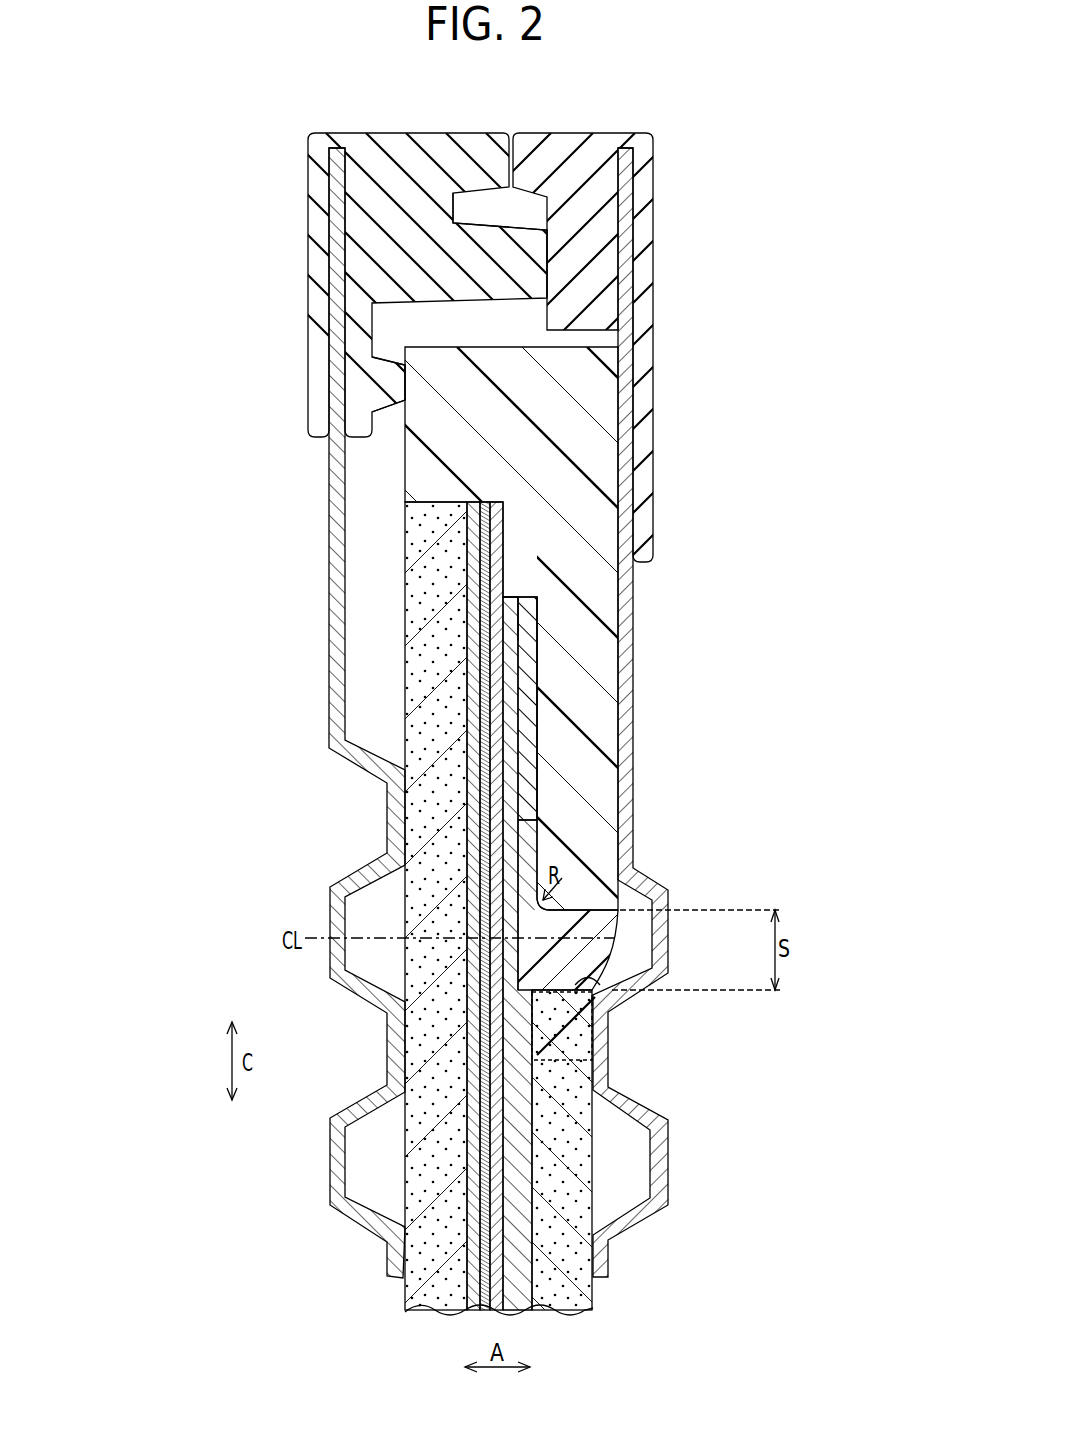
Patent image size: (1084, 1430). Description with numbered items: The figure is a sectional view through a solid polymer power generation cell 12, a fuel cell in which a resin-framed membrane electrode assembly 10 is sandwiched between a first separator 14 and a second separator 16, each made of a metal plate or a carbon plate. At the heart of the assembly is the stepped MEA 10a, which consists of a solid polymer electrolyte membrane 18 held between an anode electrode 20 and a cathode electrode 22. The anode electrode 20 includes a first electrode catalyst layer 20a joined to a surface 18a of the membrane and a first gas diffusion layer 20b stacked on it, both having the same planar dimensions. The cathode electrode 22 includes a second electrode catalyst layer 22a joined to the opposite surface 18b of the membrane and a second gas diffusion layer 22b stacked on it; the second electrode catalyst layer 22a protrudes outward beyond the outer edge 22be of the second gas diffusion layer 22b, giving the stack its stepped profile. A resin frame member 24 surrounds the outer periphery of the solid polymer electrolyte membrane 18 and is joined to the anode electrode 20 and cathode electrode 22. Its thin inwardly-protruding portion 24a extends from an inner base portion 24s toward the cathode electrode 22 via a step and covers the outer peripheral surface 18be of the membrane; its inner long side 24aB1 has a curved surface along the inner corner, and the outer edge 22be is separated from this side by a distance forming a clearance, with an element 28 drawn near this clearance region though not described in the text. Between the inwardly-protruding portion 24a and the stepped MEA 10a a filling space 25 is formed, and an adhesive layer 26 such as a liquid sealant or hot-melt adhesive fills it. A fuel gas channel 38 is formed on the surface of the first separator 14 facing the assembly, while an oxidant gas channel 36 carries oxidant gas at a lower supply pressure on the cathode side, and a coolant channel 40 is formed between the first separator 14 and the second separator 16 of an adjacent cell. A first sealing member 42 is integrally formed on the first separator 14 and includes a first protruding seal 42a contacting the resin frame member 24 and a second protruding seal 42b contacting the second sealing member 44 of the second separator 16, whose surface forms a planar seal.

The resin-framed membrane electrode assembly 10 is at (393, 463).
The stepped MEA 10a is at (580, 1122).
The power generation cell 12 is at (648, 124).
The first separator 14 is at (328, 907).
The second separator 16 is at (668, 890).
The solid polymer electrolyte membrane 18 is at (492, 1082).
The surface of the solid polymer electrolyte membrane 18a is at (470, 1025).
The surface of the solid polymer electrolyte membrane 18b is at (503, 1047).
The outer peripheral surface of the solid polymer electrolyte membrane 18be is at (503, 662).
The anode electrode 20 is at (270, 1165).
The first electrode catalyst layer 20a is at (490, 1187).
The first gas diffusion layer 20b is at (403, 1205).
The cathode electrode 22 is at (730, 1173).
The second electrode catalyst layer 22a is at (548, 1178).
The second gas diffusion layer 22b is at (593, 1203).
The outer edge of the second gas diffusion layer 22be is at (600, 985).
The resin frame member 24 is at (485, 345).
The inwardly-protruding portion 24a is at (598, 783).
The inner long side 24aB1 is at (615, 938).
The inner base portion 24s is at (420, 524).
The filling space 25 is at (540, 636).
The adhesive layer 26 is at (528, 733).
The clearance 28 is at (608, 968).
The oxidant gas channel 36 is at (618, 1147).
The fuel gas channel 38 is at (362, 1135).
The coolant channel 40 is at (362, 799).
The first sealing member 42 is at (306, 180).
The first protruding seal 42a is at (393, 382).
The second protruding seal 42b is at (520, 270).
The second sealing member 44 is at (657, 180).